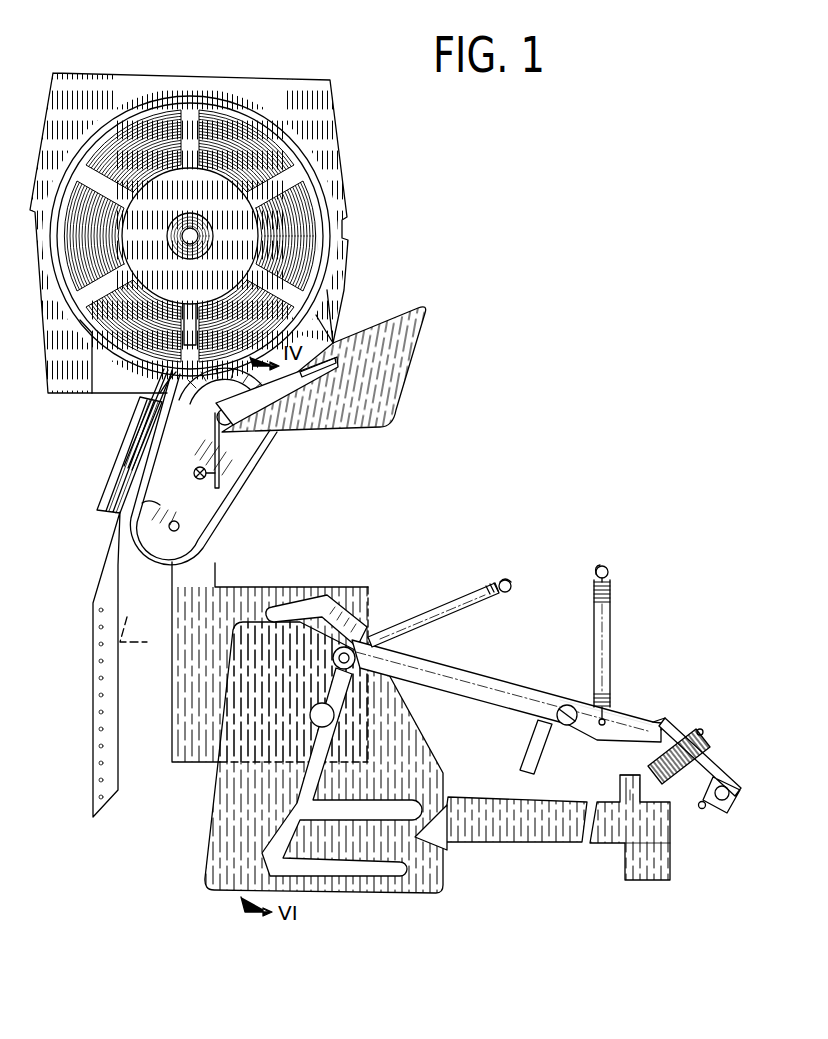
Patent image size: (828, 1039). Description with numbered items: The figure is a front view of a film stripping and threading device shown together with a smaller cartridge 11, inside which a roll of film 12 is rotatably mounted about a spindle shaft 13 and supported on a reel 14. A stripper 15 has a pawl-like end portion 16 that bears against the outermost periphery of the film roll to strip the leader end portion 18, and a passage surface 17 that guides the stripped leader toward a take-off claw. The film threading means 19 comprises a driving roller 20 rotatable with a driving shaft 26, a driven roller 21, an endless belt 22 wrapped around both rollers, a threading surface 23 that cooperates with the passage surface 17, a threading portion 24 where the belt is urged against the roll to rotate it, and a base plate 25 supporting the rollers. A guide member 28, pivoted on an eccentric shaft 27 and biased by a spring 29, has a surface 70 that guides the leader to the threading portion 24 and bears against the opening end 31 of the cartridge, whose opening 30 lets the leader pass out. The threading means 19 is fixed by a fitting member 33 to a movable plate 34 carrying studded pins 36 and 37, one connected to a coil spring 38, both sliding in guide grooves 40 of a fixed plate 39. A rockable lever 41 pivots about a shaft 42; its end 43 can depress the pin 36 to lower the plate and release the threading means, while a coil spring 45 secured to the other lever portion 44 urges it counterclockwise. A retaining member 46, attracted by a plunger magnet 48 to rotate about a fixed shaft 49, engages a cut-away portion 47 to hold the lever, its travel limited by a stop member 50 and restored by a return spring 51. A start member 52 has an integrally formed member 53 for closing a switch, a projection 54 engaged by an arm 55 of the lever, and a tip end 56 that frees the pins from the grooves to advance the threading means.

The smaller cartridge 11 is at (310, 90).
The roll of film 12 is at (256, 155).
The spindle shaft 13 is at (192, 226).
The reel 14 is at (300, 185).
The stripper 15 is at (125, 440).
The pawl-like end portion 16 is at (172, 368).
The passage surface 17 is at (165, 414).
The leader end portion 18 is at (95, 768).
The film threading means 19 is at (240, 468).
The driving roller 20 is at (200, 549).
The driven roller 21 is at (219, 424).
The endless belt 22 is at (240, 487).
The threading surface 23 is at (138, 470).
The threading portion 24 is at (203, 340).
The base plate 25 is at (145, 506).
The driving shaft 26 is at (170, 532).
The eccentric shaft 27 is at (236, 415).
The guide member 28 is at (385, 395).
The spring 29 is at (318, 385).
The opening 30 is at (110, 367).
The opening end 31 is at (338, 335).
The fitting member 33 is at (205, 480).
The movable plate 34 is at (190, 727).
The studded pin 36 is at (333, 657).
The studded pin 37 is at (322, 727).
The coil spring 38 is at (425, 616).
The plate 39 is at (215, 849).
The guide grooves 40 is at (395, 817).
The rockable lever 41 is at (470, 667).
The shaft 42 is at (565, 704).
The end of rockable lever 43 is at (340, 604).
The lever arm 44 is at (623, 720).
The coil spring 45 is at (606, 622).
The retaining member 46 is at (708, 756).
The cut-away portion 47 is at (661, 720).
The plunger magnet 48 is at (672, 765).
The fixed shaft 49 is at (722, 801).
The stop member 50 is at (702, 728).
The return spring 51 is at (702, 809).
The start member 52 is at (641, 878).
The integrally formed member 53 is at (622, 856).
The projection 54 is at (630, 786).
The arm 55 is at (535, 752).
The tip end 56 is at (445, 830).
The surface 70 is at (340, 362).